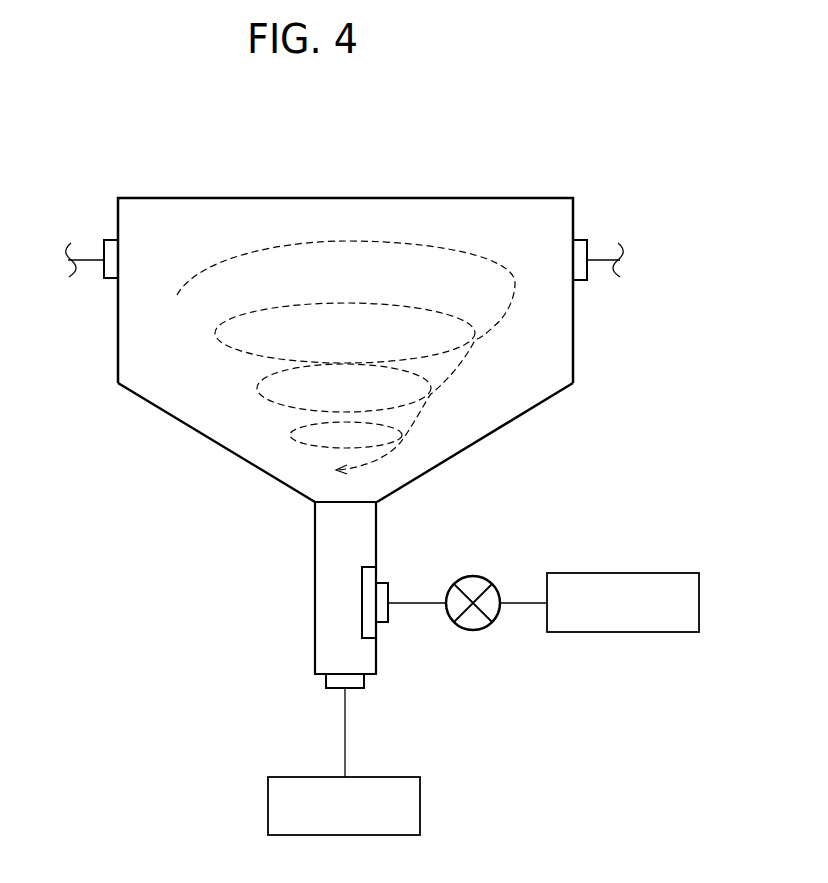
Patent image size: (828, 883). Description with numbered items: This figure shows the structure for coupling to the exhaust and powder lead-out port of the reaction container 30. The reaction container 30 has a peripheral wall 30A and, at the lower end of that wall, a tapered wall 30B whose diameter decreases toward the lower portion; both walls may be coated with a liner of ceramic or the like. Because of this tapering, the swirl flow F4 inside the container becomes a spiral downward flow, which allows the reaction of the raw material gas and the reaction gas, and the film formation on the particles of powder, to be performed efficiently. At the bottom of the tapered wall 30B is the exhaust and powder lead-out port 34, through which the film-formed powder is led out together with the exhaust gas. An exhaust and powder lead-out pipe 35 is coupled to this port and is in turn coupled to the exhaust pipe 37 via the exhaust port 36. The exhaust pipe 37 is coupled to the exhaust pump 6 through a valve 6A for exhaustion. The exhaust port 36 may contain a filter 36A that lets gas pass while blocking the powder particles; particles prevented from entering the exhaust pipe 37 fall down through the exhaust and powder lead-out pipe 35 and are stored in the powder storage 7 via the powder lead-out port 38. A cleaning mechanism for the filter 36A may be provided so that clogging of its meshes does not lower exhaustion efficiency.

The reaction container 30 is at (333, 350).
The peripheral wall 30A is at (118, 340).
The tapered wall 30B is at (205, 432).
The swirl flow F4 is at (490, 325).
The exhaust and powder lead-out port 34 is at (339, 487).
The exhaust and powder lead-out pipe 35 is at (315, 578).
The filter 36A is at (362, 582).
The exhaust port 36 is at (392, 614).
The exhaust pipe 37 is at (418, 602).
The valve 6A is at (468, 576).
The exhaust pump 6 is at (621, 573).
The powder lead-out port 38 is at (366, 682).
The powder storage 7 is at (420, 805).